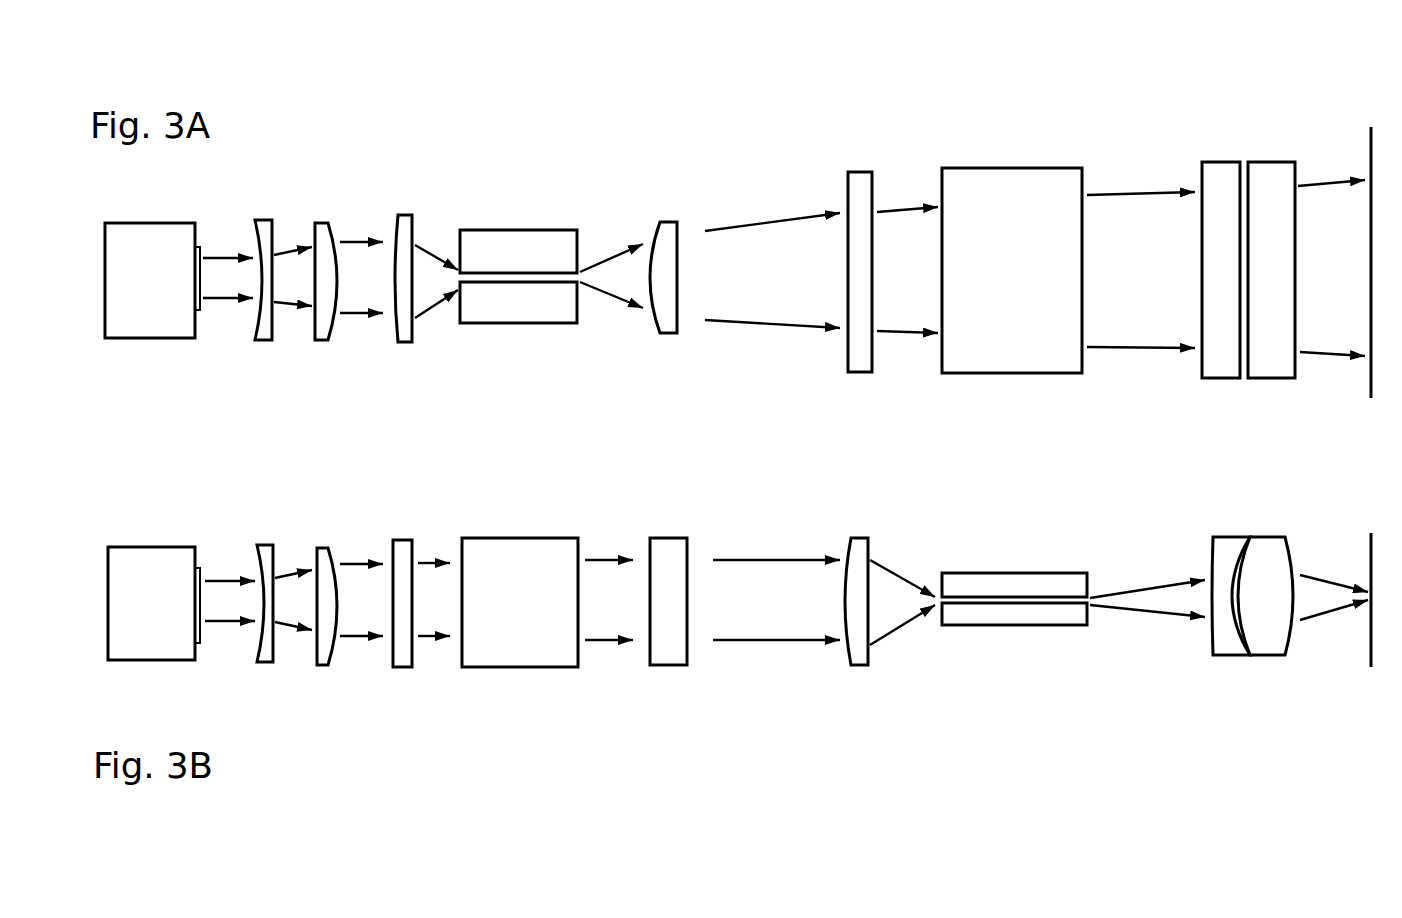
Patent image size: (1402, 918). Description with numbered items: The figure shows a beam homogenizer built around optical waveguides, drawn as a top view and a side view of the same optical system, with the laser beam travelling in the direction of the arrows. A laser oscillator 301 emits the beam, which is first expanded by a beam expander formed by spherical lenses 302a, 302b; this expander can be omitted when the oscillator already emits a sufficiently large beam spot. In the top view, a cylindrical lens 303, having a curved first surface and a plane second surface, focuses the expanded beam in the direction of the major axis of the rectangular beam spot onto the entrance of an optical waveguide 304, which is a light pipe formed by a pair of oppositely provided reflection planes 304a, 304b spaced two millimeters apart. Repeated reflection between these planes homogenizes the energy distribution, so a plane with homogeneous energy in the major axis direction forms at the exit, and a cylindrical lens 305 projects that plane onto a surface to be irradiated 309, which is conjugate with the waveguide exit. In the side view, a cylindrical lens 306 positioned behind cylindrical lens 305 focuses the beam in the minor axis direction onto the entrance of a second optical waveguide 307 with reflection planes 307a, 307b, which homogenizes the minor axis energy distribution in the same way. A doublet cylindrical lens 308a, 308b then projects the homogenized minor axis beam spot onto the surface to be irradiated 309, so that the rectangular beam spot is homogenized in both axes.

In FIG. 3A, the laser oscillator 301 is at (152, 322).
In FIG. 3B, the laser oscillator 301 is at (133, 560).
In FIG. 3A, the spherical lens 302a is at (263, 335).
In FIG. 3B, the spherical lens 302a is at (265, 560).
In FIG. 3A, the spherical lens 302b is at (322, 335).
In FIG. 3B, the spherical lens 302b is at (332, 560).
In FIG. 3A, the cylindrical lens 303 is at (407, 335).
In FIG. 3B, the cylindrical lens 303 is at (405, 545).
In FIG. 3A, the optical waveguide 304 is at (533, 350).
In FIG. 3B, the optical waveguide 304 is at (513, 557).
In FIG. 3A, the reflection plane 304a is at (558, 258).
In FIG. 3A, the reflection plane 304b is at (518, 347).
In FIG. 3A, the cylindrical lens 305 is at (668, 318).
In FIG. 3B, the cylindrical lens 305 is at (660, 560).
In FIG. 3A, the cylindrical lens 306 is at (866, 357).
In FIG. 3B, the cylindrical lens 306 is at (862, 555).
In FIG. 3A, the optical waveguide 307 is at (1005, 345).
In FIG. 3B, the optical waveguide 307 is at (1012, 531).
In FIG. 3B, the reflection plane 307a is at (985, 590).
In FIG. 3B, the reflection plane 307b is at (1023, 618).
In FIG. 3A, the doublet cylindrical lens 308a is at (1222, 365).
In FIG. 3B, the doublet cylindrical lens 308a is at (1220, 550).
In FIG. 3A, the doublet cylindrical lens 308b is at (1277, 365).
In FIG. 3B, the doublet cylindrical lens 308b is at (1265, 545).
In FIG. 3A, the surface to be irradiated 309 is at (1371, 398).
In FIG. 3B, the surface to be irradiated 309 is at (1371, 530).